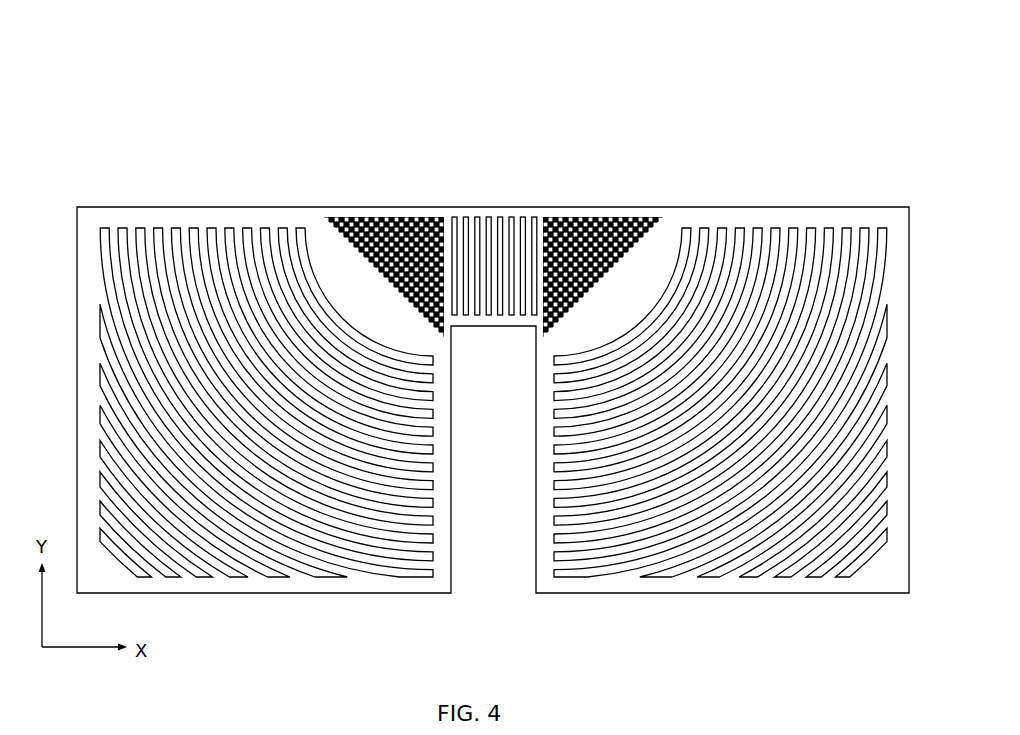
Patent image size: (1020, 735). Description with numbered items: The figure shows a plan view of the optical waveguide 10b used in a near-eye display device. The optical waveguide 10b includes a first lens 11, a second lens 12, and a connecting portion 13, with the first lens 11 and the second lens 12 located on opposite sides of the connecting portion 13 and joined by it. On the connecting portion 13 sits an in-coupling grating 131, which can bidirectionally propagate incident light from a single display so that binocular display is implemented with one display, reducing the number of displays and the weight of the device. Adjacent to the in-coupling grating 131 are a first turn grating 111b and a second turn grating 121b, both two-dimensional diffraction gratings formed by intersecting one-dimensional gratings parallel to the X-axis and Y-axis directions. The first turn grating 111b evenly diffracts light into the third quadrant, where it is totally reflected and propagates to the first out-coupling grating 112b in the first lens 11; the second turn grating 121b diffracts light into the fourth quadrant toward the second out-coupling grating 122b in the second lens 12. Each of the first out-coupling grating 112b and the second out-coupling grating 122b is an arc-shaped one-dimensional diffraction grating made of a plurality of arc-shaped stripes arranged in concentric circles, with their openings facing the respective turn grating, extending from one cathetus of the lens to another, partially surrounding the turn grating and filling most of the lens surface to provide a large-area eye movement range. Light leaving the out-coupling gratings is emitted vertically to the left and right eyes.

The optical waveguide 10b is at (496, 78).
The first lens 11 is at (272, 397).
The first turn grating 111b is at (375, 220).
The first out-coupling grating 112b is at (202, 552).
The second lens 12 is at (715, 386).
The second turn grating 121b is at (611, 220).
The second out-coupling grating 122b is at (673, 568).
The connecting portion 13 is at (494, 270).
The in-coupling grating 131 is at (497, 308).